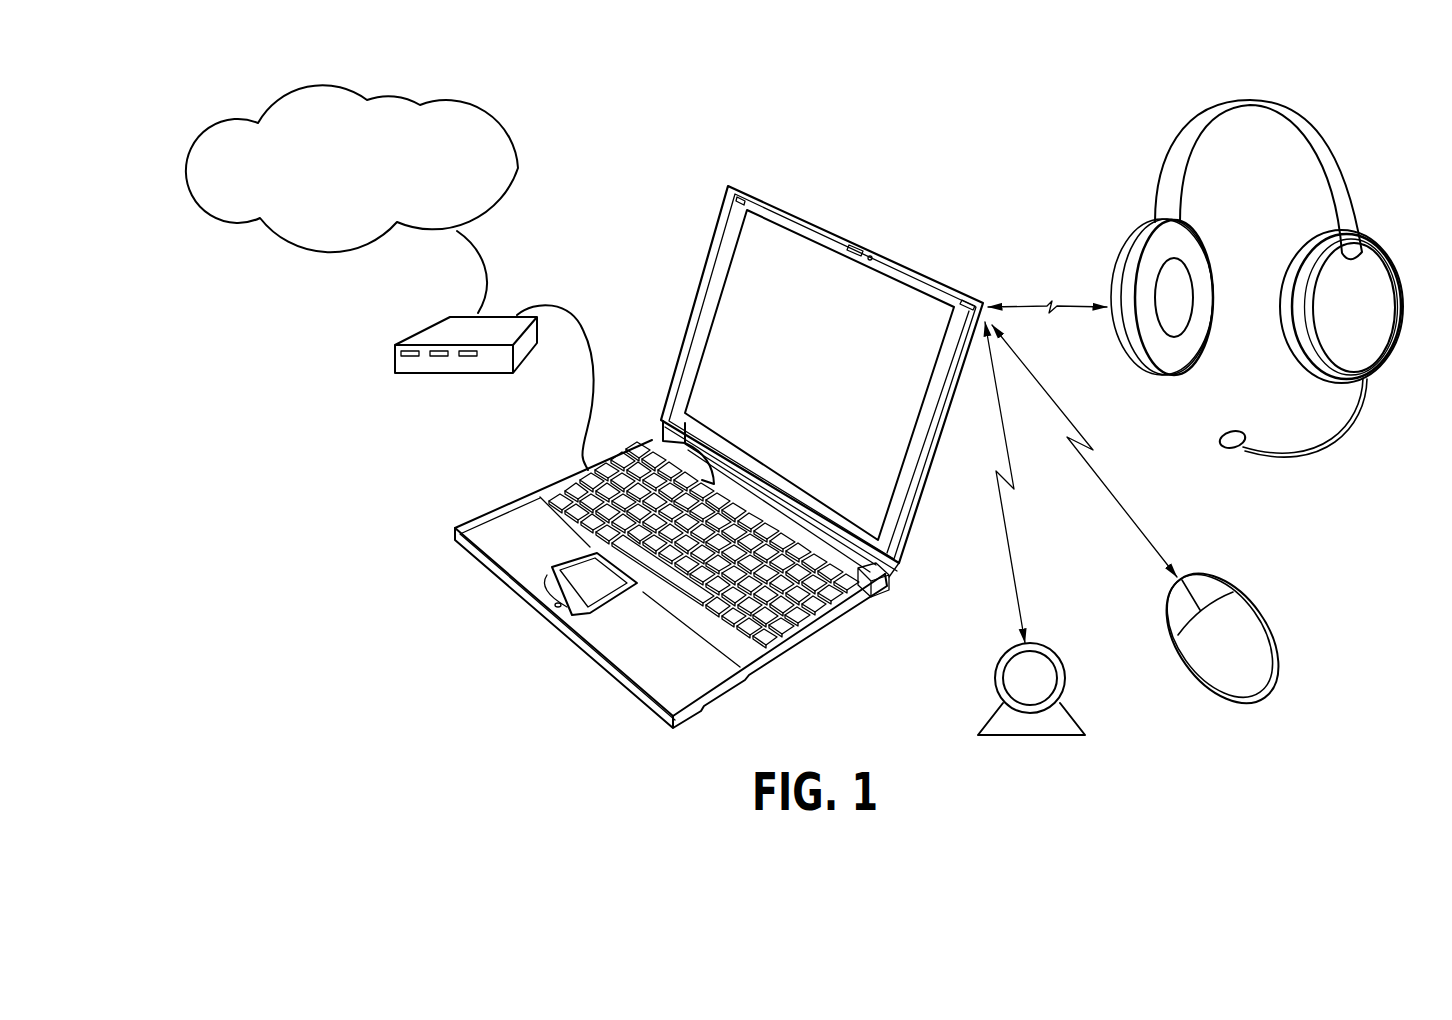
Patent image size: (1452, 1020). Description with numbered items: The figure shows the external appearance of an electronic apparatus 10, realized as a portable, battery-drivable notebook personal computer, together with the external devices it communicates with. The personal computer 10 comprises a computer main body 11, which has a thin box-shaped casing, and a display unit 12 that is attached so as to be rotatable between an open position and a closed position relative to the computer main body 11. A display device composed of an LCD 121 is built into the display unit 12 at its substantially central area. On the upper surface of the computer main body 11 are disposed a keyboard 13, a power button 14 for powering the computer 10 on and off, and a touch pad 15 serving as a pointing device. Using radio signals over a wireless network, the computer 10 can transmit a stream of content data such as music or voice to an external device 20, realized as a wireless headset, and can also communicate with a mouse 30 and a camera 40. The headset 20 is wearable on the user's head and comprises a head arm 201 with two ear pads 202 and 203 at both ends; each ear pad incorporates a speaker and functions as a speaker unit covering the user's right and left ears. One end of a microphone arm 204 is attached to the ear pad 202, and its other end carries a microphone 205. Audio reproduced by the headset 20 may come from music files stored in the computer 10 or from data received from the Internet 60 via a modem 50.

The electronic apparatus 10 is at (719, 450).
The computer main body 11 is at (627, 684).
The display unit 12 is at (816, 374).
The LCD 121 is at (828, 276).
The keyboard 13 is at (568, 475).
The power button 14 is at (690, 442).
The touch pad 15 is at (540, 605).
The external device 20 is at (1271, 299).
The head arm 201 is at (1350, 170).
The ear pad 202 is at (1367, 377).
The ear pad 203 is at (1190, 360).
The microphone arm 204 is at (1308, 460).
The microphone 205 is at (1253, 418).
The mouse 30 is at (1278, 648).
The camera 40 is at (1078, 728).
The modem 50 is at (395, 358).
The Internet 60 is at (518, 157).